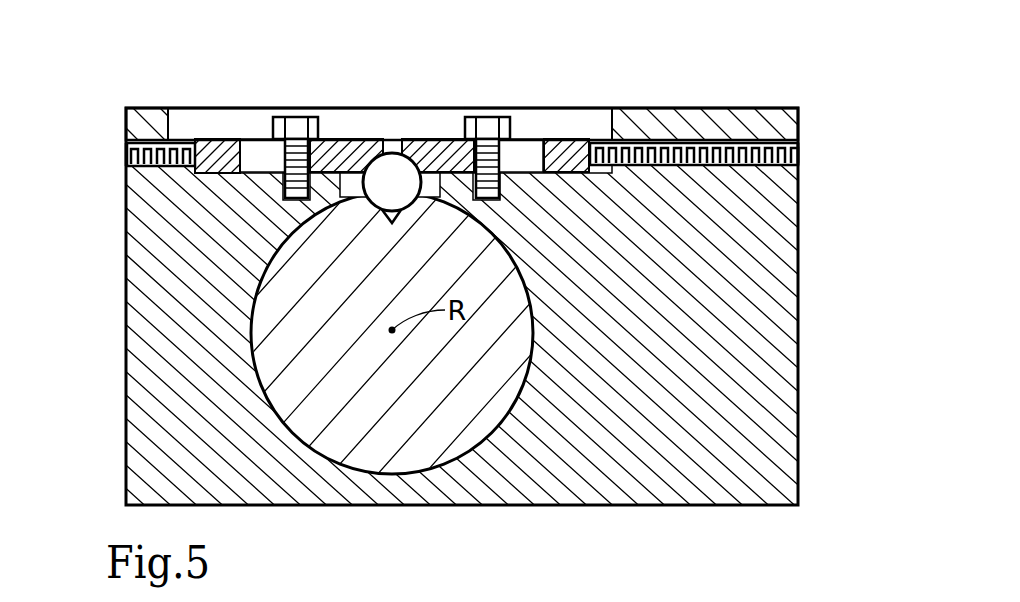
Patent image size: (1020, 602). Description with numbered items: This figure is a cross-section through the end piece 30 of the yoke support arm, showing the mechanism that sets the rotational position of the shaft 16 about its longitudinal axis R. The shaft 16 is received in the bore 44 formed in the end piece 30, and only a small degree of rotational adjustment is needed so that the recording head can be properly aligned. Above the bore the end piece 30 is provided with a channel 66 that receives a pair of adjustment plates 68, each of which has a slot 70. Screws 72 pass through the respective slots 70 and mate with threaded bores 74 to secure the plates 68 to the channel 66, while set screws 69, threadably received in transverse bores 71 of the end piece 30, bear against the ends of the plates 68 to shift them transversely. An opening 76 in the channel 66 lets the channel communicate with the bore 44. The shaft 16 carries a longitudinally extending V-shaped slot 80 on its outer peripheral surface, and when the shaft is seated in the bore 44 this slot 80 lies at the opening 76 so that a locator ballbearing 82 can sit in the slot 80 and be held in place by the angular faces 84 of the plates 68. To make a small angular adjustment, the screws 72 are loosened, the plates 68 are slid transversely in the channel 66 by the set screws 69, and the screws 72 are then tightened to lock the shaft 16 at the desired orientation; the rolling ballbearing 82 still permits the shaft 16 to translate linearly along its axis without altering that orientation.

The shaft 16 is at (363, 453).
The end piece 30 is at (700, 507).
The bore 44 is at (497, 420).
The channel 66 is at (447, 125).
The adjustment plates 68 is at (215, 150).
The set screws 69 is at (130, 146).
The slots 70 is at (256, 155).
The transverse bores 71 is at (118, 157).
The screws 72 is at (295, 117).
The threaded bores 74 is at (287, 195).
The opening 76 is at (447, 189).
The V-shaped channel or slot 80 is at (410, 212).
The locator ballbearing 82 is at (385, 215).
The angular faces 84 is at (415, 138).